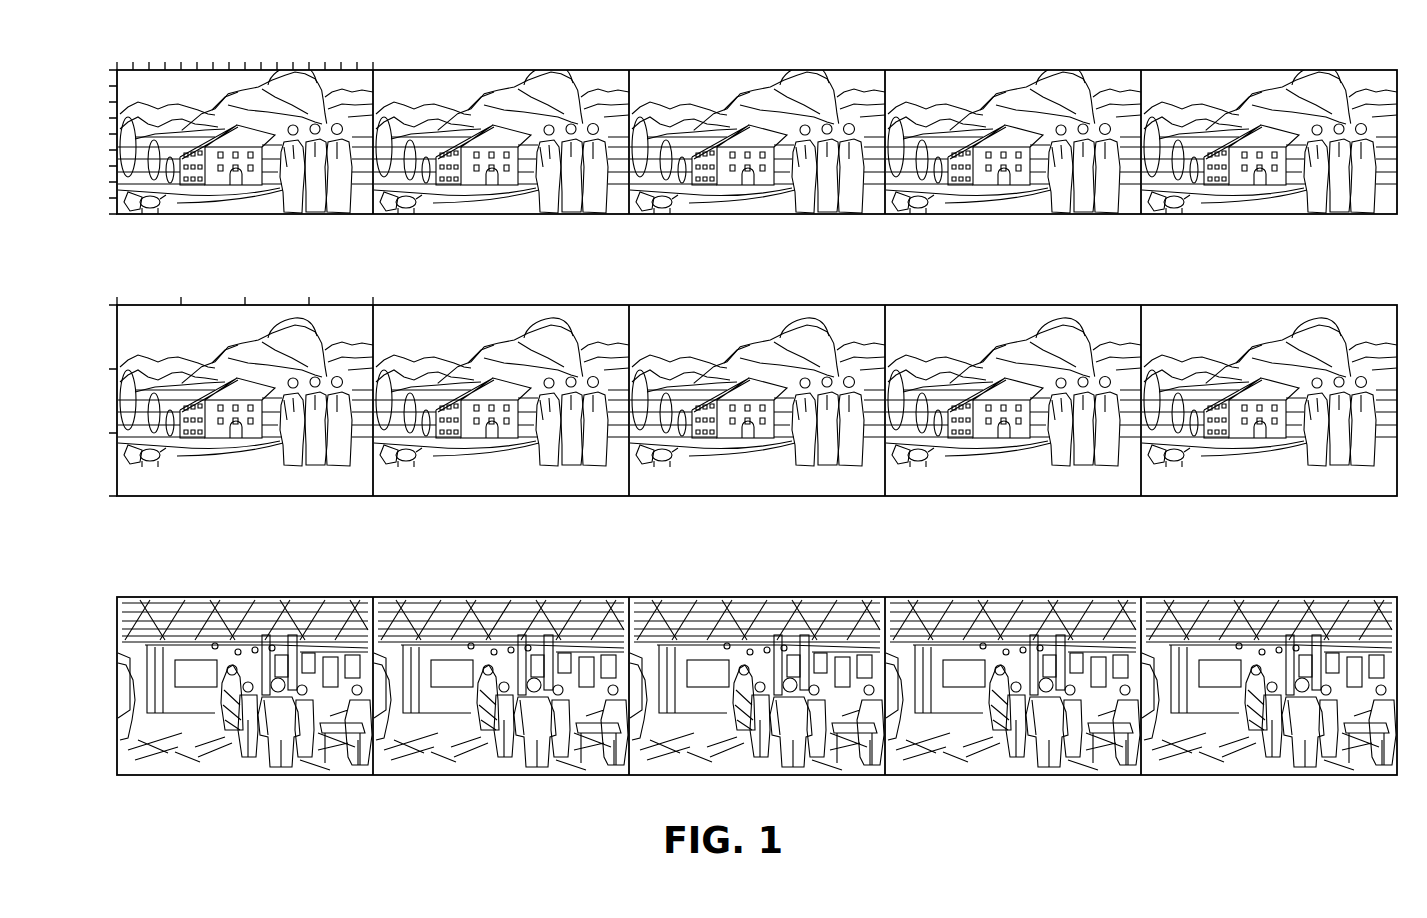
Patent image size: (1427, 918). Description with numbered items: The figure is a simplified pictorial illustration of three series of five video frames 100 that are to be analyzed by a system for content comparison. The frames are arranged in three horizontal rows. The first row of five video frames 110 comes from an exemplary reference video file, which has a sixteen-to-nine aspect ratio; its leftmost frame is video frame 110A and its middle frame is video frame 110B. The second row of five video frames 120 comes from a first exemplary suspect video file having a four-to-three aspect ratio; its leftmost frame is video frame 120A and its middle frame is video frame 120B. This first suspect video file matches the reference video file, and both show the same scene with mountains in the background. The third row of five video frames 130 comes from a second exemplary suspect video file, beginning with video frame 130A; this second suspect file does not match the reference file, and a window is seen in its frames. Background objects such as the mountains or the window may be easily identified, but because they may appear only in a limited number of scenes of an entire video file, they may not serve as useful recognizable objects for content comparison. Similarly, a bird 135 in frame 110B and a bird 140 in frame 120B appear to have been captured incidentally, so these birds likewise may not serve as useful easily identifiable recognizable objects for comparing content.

The series of video frames 100 is at (105, 62).
The first row of five video frames 110 is at (1345, 60).
The video frame 110A is at (334, 214).
The video frame 110B is at (787, 214).
The second row of five video frames 120 is at (1345, 295).
The video frame 120A is at (334, 496).
The video frame 120B is at (757, 496).
The third row of five video frames 130 is at (1345, 586).
The video frame 130A is at (334, 775).
The bird 135 is at (720, 93).
The bird 140 is at (718, 345).